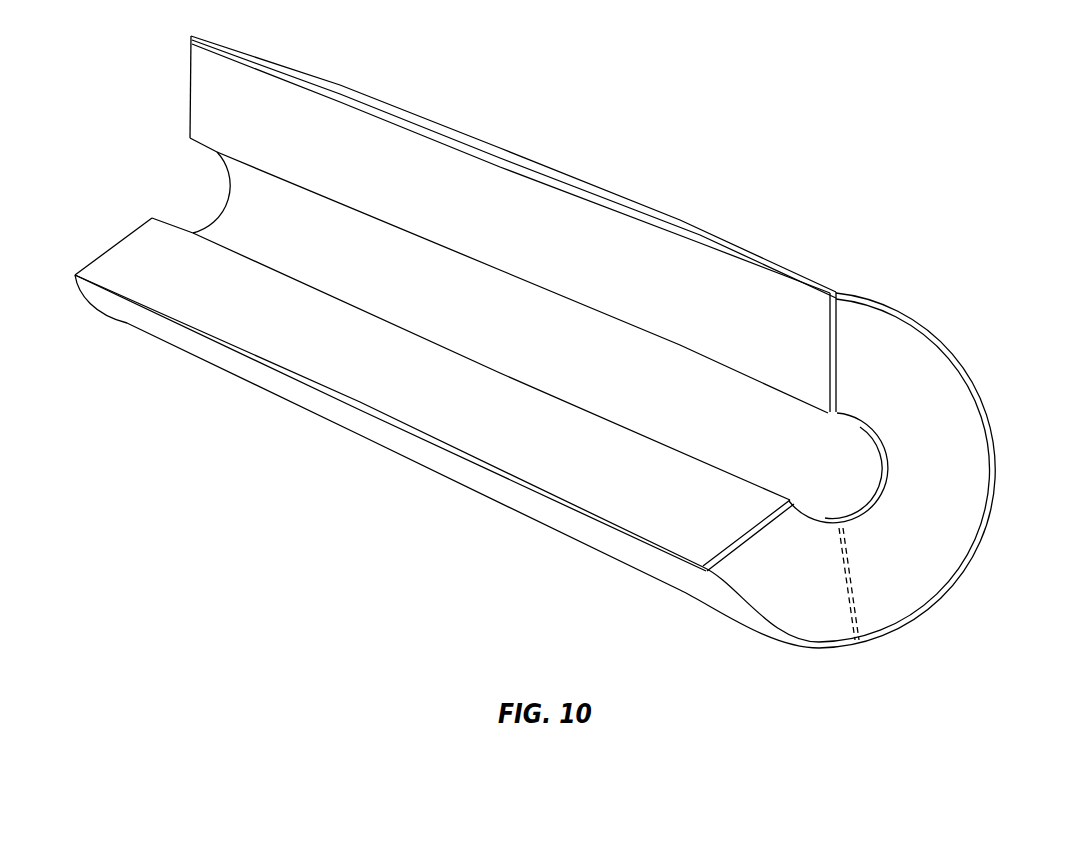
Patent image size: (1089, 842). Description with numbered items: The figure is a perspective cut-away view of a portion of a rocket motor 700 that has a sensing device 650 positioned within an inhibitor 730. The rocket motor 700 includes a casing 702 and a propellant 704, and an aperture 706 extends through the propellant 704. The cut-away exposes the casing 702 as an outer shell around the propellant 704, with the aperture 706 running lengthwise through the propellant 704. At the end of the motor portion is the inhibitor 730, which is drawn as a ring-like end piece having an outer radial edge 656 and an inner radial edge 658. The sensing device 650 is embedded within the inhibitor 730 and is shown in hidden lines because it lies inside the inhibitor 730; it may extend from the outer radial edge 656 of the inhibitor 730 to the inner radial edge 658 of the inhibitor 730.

The rocket motor 700 is at (572, 342).
The casing 702 is at (758, 248).
The propellant 704 is at (403, 362).
The aperture 706 is at (184, 188).
The outer radial edge 656 is at (960, 358).
The inner radial edge 658 is at (876, 450).
The inhibitor 730 is at (957, 442).
The sensing device 650 is at (857, 590).